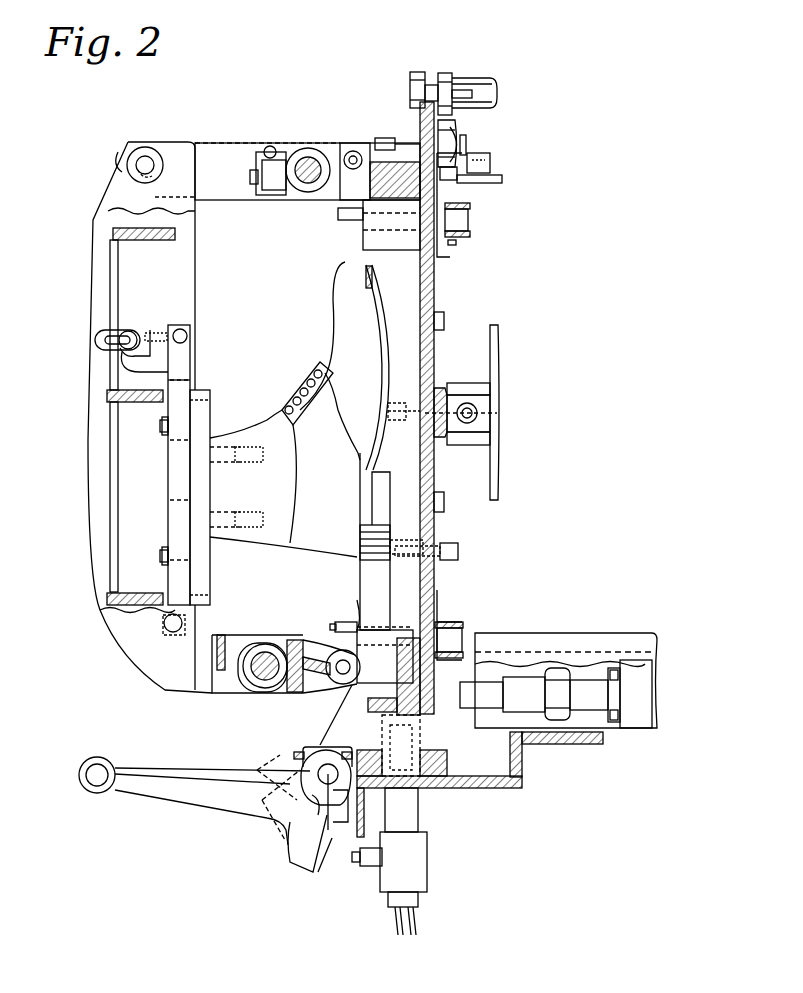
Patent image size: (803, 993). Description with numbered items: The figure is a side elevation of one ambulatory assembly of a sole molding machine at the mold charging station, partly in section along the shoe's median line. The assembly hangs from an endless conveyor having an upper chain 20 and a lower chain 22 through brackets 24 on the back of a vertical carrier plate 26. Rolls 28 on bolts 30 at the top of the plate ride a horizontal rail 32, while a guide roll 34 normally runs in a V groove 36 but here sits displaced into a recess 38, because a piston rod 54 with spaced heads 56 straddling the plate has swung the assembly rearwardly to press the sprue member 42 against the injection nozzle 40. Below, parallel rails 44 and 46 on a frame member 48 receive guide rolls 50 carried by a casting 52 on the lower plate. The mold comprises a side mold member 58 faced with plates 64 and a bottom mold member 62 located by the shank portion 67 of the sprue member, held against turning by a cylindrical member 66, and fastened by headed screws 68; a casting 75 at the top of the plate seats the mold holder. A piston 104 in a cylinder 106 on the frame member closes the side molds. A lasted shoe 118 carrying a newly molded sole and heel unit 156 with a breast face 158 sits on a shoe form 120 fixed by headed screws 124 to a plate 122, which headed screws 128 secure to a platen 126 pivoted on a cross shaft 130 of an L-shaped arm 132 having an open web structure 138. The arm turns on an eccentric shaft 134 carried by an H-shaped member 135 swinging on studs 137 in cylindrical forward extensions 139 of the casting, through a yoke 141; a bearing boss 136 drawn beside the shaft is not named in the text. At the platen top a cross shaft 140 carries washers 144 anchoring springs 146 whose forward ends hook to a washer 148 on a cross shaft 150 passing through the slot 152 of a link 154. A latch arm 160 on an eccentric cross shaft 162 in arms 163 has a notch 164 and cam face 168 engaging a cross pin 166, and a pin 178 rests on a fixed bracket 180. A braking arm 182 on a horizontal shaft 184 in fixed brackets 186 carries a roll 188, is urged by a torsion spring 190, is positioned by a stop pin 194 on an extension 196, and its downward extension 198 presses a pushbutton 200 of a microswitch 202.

The upper chain 20 is at (468, 220).
The lower chain 22 is at (455, 638).
The brackets 24 is at (472, 207).
The plate 26 is at (434, 300).
The rolls 28 is at (458, 130).
The bolts 30 is at (405, 140).
The horizontal rail 32 is at (490, 162).
The guide roll 34 is at (458, 130).
The V groove 36 is at (450, 180).
The recess 38 is at (458, 180).
The injection nozzle 40 is at (458, 398).
The sprue member 42 is at (437, 440).
The rail 44 is at (368, 755).
The rail 46 is at (447, 765).
The frame member 48 is at (482, 788).
The guide rolls 50 is at (415, 748).
The casting 52 is at (358, 685).
The piston rod 54 is at (497, 90).
The heads 56 is at (418, 70).
The side mold member 58 is at (365, 248).
The bottom mold member 62 is at (392, 305).
The plates 64 is at (345, 262).
The cylindrical member 66 is at (433, 548).
The cylindrical shank portion 67 is at (397, 403).
The headed screws 68 is at (444, 318).
The casting 75 is at (360, 145).
The piston 104 is at (492, 684).
The cylinder 106 is at (637, 683).
The lasted shoe 118 is at (335, 352).
The shoe form 120 is at (283, 536).
The plate 122 is at (210, 414).
The headed screws 124 is at (250, 462).
The platen 126 is at (172, 491).
The headed screws 128 is at (160, 425).
The cross shaft 130 is at (185, 640).
The arm 132 is at (150, 683).
The eccentric shaft 134 is at (268, 650).
The H-shaped member 135 is at (340, 650).
The bearing boss 136 is at (248, 645).
The studs 137 is at (360, 645).
The open web structure 138 is at (112, 290).
The cylindrical forward extensions 139 is at (372, 645).
The cross shaft 140 is at (190, 348).
The yoke 141 is at (245, 693).
The washers 144 is at (186, 338).
The spring 146 is at (162, 330).
The washer 148 is at (128, 332).
The cross shaft 150 is at (115, 348).
The slot 152 is at (140, 352).
The link 154 is at (190, 385).
The sole and heel unit 156 is at (365, 495).
The breast face 158 is at (375, 472).
The latch arm 160 is at (225, 190).
The eccentric cross shaft 162 is at (304, 190).
The arms 163 is at (365, 190).
The notch 164 is at (156, 198).
The cross pin 166 is at (146, 163).
The cam face 168 is at (112, 190).
The pin 178 is at (270, 146).
The fixed bracket 180 is at (258, 157).
The arm 182 is at (180, 800).
The horizontal shaft 184 is at (330, 805).
The fixed brackets 186 is at (303, 768).
The roll 188 is at (85, 762).
The torsion spring 190 is at (262, 820).
The stop pin 194 is at (298, 752).
The extension 196 is at (342, 752).
The downward extension 198 is at (300, 862).
The pushbutton 200 is at (358, 858).
The microswitch 202 is at (390, 878).